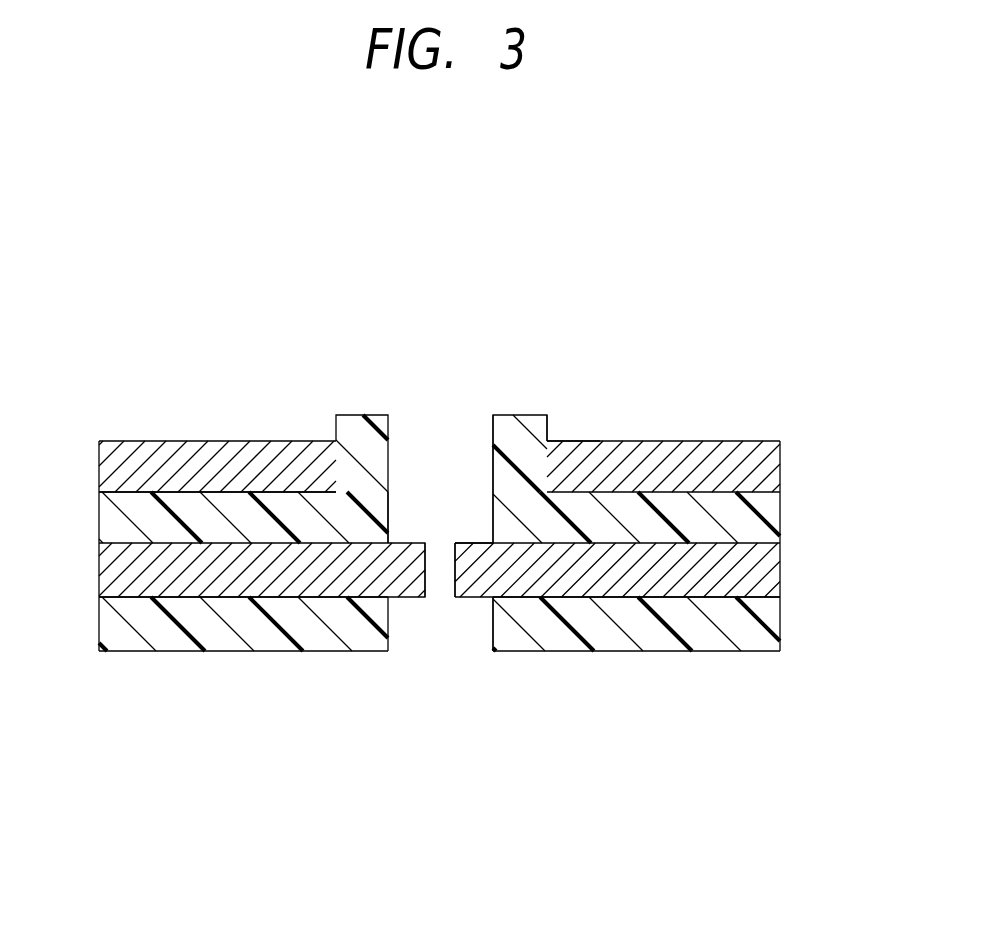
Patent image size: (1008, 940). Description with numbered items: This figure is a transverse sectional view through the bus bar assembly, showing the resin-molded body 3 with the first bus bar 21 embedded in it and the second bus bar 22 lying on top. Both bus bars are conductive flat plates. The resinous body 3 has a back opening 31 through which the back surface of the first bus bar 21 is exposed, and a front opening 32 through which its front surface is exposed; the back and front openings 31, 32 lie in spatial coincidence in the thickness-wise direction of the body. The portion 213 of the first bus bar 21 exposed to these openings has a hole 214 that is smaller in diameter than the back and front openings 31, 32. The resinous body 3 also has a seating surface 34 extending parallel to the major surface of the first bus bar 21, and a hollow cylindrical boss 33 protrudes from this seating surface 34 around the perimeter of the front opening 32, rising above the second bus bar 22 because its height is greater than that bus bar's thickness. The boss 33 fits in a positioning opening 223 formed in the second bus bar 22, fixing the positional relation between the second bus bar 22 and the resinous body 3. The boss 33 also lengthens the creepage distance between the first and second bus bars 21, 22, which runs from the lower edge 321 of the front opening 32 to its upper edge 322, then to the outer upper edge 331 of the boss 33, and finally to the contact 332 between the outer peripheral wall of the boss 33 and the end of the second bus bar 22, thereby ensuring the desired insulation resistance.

The resin-molded body 3 is at (710, 525).
The first bus bar 21 is at (218, 573).
The second bus bar 22 is at (710, 467).
The back opening 31 is at (493, 628).
The front opening 32 is at (390, 497).
The boss 33 is at (517, 437).
The seating surface 34 is at (218, 492).
The exposed portion 213 is at (407, 580).
The hole 214 is at (452, 577).
The positioning opening 223 is at (337, 472).
The lower edge of the front opening 321 is at (481, 541).
The upper edge of the front opening 322 is at (493, 445).
The outer upper edge of the boss 331 is at (547, 432).
The contact between the outer peripheral wall of the boss and the end of the second 332 is at (548, 440).